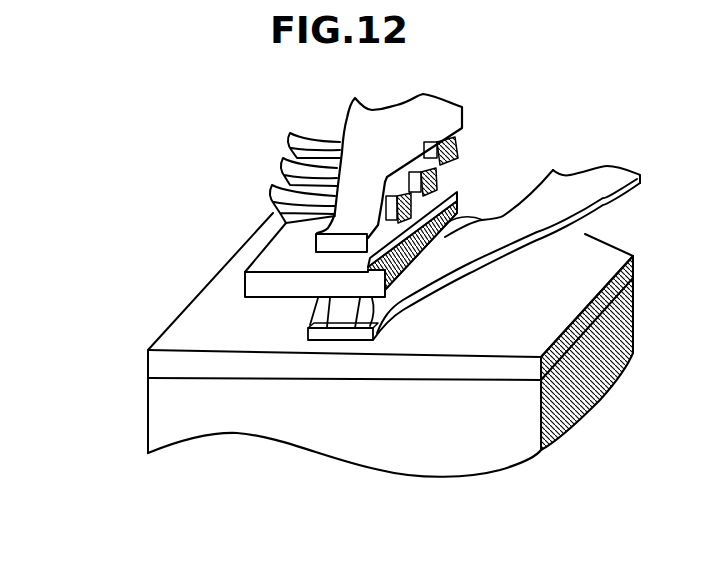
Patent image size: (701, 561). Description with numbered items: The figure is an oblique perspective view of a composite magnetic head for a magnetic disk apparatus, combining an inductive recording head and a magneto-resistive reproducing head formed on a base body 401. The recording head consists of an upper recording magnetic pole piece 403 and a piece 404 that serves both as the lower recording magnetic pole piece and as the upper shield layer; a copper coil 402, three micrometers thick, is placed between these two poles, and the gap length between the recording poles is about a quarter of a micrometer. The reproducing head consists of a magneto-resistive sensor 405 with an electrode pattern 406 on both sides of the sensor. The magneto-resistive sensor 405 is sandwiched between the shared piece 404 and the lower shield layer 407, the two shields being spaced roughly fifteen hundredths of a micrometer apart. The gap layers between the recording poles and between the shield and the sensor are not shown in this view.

The base body 401 is at (158, 413).
The coil 402 is at (288, 140).
The upper recording magnetic pole piece 403 is at (316, 247).
The piece used for both lower recording magnetic pole piece and upper shield layer 404 is at (243, 285).
The magneto-resistive sensor 405 is at (322, 340).
The electrode pattern 406 is at (403, 285).
The lower shield layer 407 is at (158, 372).